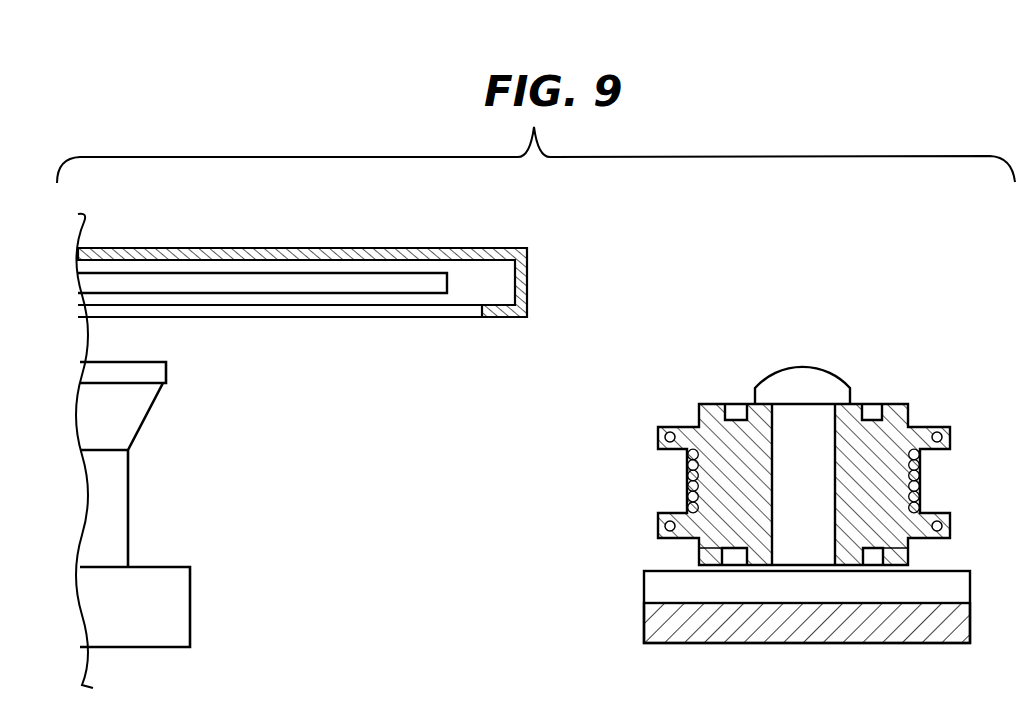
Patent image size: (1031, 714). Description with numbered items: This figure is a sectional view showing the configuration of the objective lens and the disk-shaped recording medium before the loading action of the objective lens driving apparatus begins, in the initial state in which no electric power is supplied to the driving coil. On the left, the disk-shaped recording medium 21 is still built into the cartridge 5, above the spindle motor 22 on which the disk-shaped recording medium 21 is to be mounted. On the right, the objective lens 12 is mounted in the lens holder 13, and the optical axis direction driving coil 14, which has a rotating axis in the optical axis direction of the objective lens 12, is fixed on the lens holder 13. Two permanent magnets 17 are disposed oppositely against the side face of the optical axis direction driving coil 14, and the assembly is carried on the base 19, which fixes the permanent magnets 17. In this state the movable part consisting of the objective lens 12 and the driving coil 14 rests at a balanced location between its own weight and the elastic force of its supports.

The cartridge 5 is at (415, 248).
The disk-shaped recording medium 21 is at (185, 283).
The spindle motor 22 is at (102, 487).
The objective lens 12 is at (830, 388).
The lens holder 13 is at (912, 428).
The optical axis direction driving coil 14 is at (923, 478).
The permanent magnet 17 is at (737, 558).
The base 19 is at (933, 580).